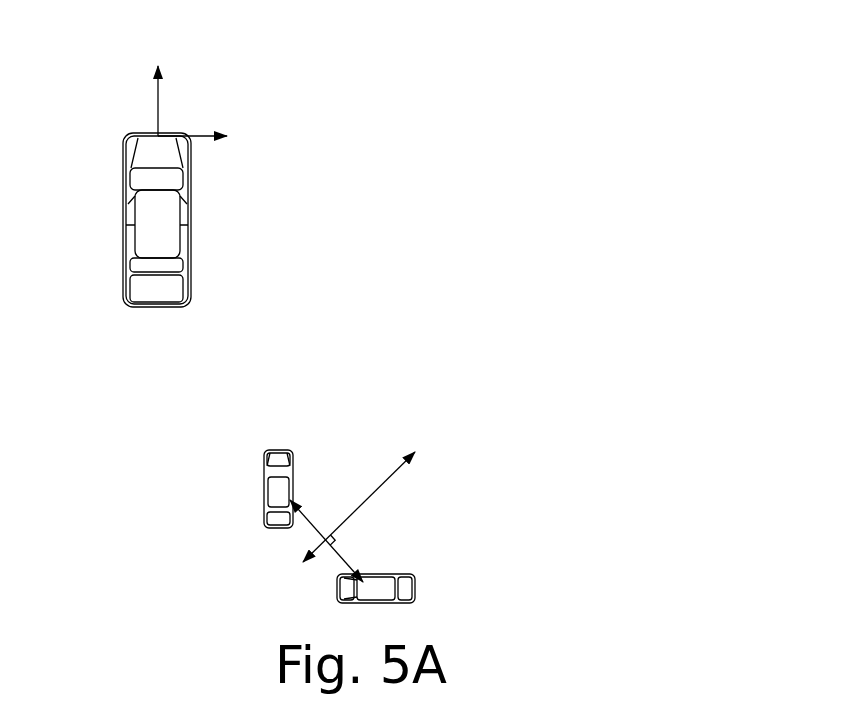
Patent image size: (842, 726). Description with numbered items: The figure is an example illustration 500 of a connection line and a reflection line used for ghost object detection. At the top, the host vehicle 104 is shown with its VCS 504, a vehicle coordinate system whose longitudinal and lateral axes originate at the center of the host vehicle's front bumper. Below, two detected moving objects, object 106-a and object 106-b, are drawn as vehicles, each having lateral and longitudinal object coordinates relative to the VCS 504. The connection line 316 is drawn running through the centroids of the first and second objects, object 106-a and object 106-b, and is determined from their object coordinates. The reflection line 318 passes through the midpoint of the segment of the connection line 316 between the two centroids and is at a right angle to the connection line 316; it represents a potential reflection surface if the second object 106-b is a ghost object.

The example illustration 500 is at (701, 48).
The VCS (vehicle coordinate system) 504 is at (155, 113).
The host vehicle 104 is at (127, 157).
The first moving object 106-a is at (267, 473).
The second moving object 106-b is at (413, 577).
The connection line 316 is at (353, 570).
The reflection line 318 is at (385, 482).